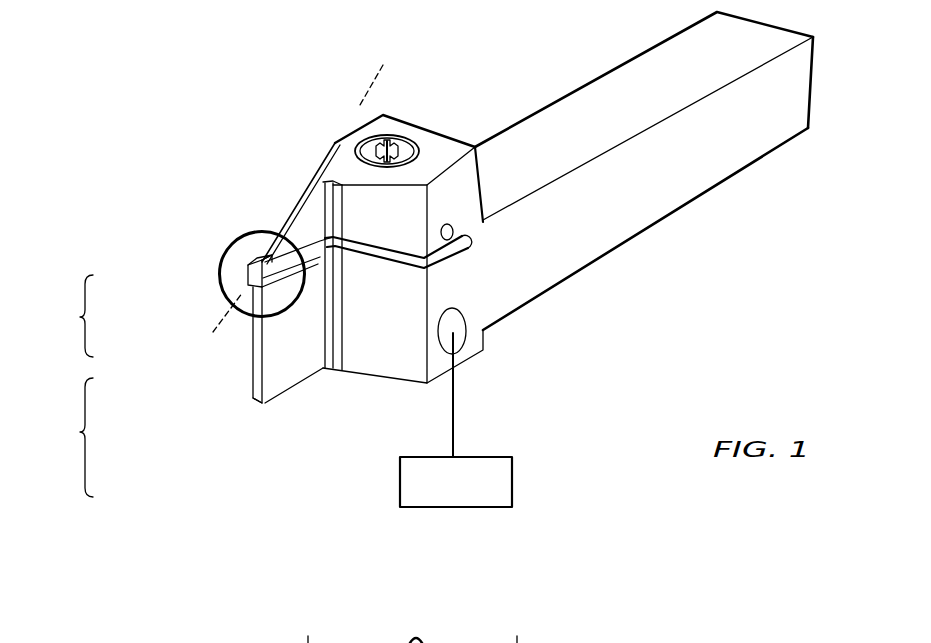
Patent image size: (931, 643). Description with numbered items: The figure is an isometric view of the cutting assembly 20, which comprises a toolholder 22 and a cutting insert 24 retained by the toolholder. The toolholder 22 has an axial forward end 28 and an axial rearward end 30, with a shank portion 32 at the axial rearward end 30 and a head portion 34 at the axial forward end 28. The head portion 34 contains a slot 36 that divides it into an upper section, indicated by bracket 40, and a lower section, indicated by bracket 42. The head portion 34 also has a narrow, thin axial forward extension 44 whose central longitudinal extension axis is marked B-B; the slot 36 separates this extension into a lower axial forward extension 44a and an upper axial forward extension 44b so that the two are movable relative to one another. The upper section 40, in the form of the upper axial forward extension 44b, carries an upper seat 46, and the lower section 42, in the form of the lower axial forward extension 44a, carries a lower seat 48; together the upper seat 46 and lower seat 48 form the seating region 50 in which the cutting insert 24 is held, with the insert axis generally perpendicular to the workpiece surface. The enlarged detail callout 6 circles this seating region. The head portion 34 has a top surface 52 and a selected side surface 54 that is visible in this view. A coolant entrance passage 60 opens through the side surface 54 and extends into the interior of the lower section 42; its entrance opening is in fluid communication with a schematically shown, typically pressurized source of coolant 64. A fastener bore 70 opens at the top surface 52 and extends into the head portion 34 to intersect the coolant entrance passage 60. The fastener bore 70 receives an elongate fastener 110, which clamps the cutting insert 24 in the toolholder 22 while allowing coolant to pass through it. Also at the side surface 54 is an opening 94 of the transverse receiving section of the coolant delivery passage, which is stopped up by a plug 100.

The cutting assembly 20 is at (288, 52).
The toolholder 22 is at (662, 62).
The cutting insert 24 is at (257, 335).
The axial forward end 28 is at (248, 393).
The axial rearward end 30 is at (813, 72).
The shank portion 32 is at (750, 140).
The head portion 34 is at (481, 185).
The slot 36 is at (440, 258).
The upper section 40 is at (72, 316).
The lower section 42 is at (72, 437).
The narrow axial forward extension 44 is at (279, 406).
The lower axial forward extension 44a is at (287, 333).
The upper axial forward extension 44b is at (315, 225).
The upper seat 46 is at (292, 227).
The lower seat 48 is at (313, 267).
The seating region 50 is at (246, 256).
The top surface 52 is at (440, 143).
The side surface 54 is at (443, 280).
The coolant entrance passage 60 is at (458, 338).
The source of coolant 64 is at (467, 490).
The fastener bore 70 is at (407, 140).
The opening 94 is at (450, 225).
The plug 100 is at (440, 244).
The elongate fastener 110 is at (365, 147).
The detail view indicator 6 is at (243, 237).